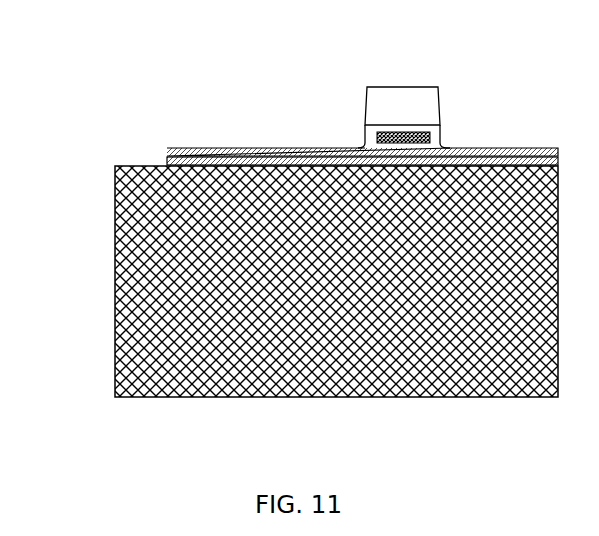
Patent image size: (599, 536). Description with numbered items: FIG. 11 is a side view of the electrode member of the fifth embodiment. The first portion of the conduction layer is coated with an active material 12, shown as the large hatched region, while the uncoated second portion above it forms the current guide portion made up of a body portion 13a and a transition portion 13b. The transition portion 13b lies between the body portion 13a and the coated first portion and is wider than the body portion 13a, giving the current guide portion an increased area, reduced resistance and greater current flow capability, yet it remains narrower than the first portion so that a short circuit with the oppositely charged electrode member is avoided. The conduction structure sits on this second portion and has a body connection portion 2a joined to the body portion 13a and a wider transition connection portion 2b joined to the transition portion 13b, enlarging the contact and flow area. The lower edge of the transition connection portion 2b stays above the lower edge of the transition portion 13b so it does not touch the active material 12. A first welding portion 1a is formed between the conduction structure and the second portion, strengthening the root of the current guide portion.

The active material 12 is at (210, 275).
The transition portion 13b is at (215, 160).
The transition connection portion 2b is at (247, 153).
The body connection portion 2a is at (410, 92).
The body portion 13a is at (366, 131).
The first welding portion 1a is at (437, 133).